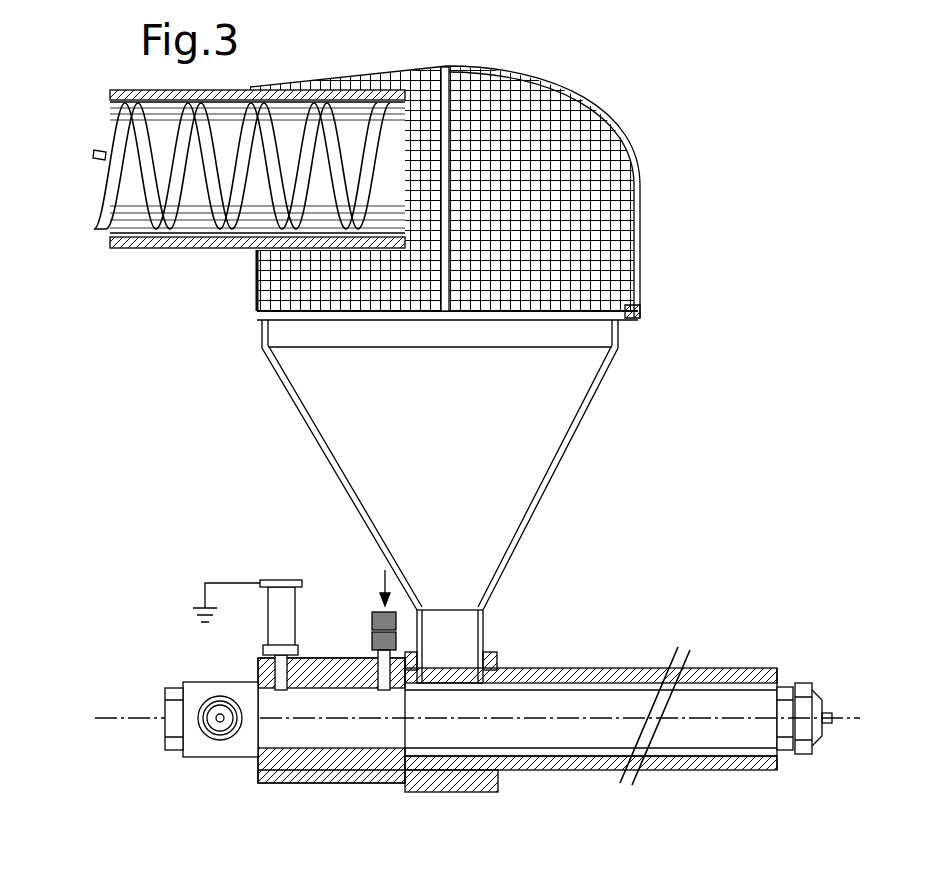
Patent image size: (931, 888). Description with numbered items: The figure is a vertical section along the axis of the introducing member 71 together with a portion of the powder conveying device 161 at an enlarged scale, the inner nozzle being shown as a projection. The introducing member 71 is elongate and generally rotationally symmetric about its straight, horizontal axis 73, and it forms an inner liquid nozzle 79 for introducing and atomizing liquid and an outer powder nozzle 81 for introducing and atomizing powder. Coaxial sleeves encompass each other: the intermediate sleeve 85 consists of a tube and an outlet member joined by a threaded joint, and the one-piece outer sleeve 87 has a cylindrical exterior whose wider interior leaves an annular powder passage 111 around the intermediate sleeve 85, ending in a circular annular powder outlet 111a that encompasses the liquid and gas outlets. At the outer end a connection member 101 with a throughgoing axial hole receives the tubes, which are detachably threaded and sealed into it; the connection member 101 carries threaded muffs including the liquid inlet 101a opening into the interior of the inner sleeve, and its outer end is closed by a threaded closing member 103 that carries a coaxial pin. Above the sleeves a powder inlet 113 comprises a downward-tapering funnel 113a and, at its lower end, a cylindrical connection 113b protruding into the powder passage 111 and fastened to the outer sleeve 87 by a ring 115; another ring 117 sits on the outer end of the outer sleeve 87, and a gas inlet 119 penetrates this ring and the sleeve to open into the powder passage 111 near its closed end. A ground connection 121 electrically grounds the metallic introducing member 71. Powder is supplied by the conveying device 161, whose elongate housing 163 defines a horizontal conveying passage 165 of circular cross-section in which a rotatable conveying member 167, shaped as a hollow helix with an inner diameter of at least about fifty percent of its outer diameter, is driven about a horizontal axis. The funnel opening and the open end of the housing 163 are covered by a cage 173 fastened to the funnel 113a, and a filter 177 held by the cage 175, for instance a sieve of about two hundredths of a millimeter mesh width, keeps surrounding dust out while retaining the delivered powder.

The introducing member 71 is at (258, 668).
The axis 73 is at (120, 725).
The inner and/or liquid nozzle 79 is at (825, 712).
The outer and/or powder nozzle 81 is at (750, 668).
The intermediate sleeve 85 is at (672, 758).
The outer sleeve 87 is at (728, 772).
The connection member 101 is at (240, 762).
The liquid inlet 101a is at (210, 700).
The closing member 103 is at (168, 712).
The powder passage 111 is at (655, 668).
The outer and/or powder outlet 111a is at (785, 680).
The powder inlet 113 is at (326, 455).
The funnel 113a is at (564, 455).
The cylindrical connection 113b is at (483, 620).
The ring 115 is at (495, 790).
The ring 117 is at (375, 783).
The gas inlet 119 is at (372, 633).
The ground connection 121 is at (283, 581).
The powder conveying device 161 is at (126, 86).
The housing 163 is at (175, 250).
The conveying passage 165 is at (107, 228).
The conveying member 167 is at (103, 137).
The cage 173 is at (437, 68).
The cage 175 is at (455, 68).
The filter 177 is at (578, 142).